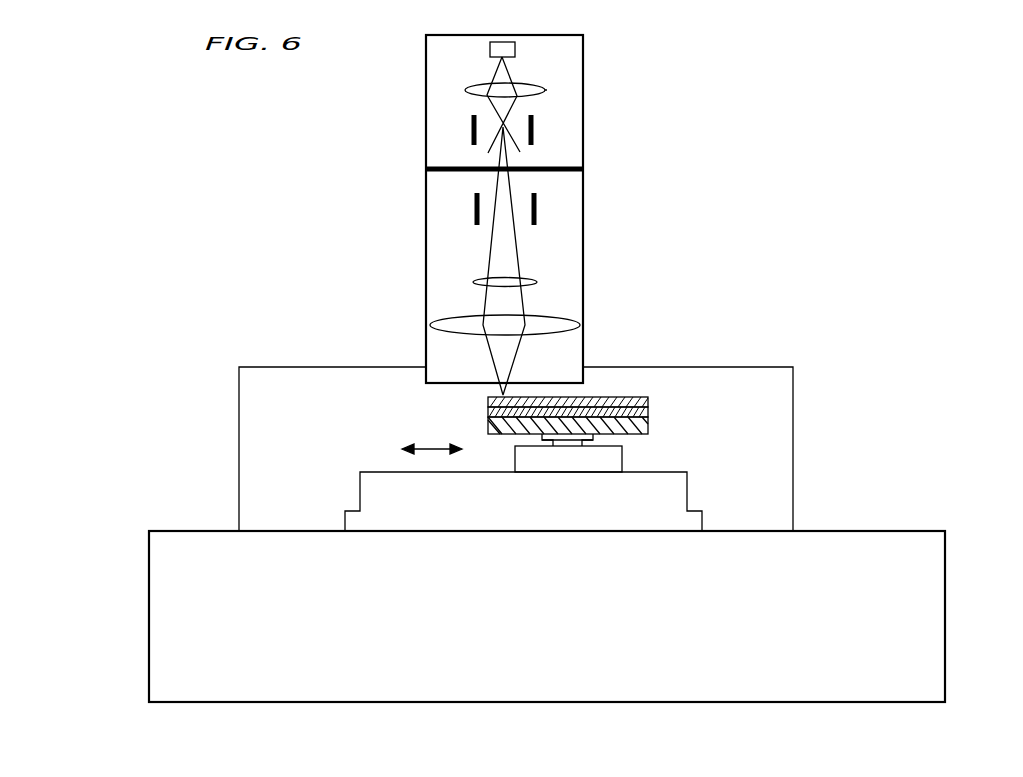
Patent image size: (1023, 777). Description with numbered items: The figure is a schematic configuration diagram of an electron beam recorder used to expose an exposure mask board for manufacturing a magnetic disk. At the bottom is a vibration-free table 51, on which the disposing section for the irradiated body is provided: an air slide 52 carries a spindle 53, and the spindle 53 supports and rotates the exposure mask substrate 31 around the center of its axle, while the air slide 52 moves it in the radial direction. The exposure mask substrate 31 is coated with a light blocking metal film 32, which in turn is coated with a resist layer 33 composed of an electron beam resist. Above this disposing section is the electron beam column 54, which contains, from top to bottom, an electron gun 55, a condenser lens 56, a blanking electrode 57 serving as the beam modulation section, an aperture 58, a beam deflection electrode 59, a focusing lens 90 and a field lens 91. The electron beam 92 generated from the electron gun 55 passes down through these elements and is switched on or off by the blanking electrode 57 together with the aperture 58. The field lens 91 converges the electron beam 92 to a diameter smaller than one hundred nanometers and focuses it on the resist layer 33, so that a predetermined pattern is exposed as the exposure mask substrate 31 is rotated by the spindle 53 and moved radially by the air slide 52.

The electron beam column 54 is at (410, 35).
The electron gun 55 is at (515, 50).
The electron beam 92 is at (512, 68).
The condenser lens 56 is at (586, 103).
The blanking electrode 57 is at (535, 128).
The aperture 58 is at (505, 176).
The beam deflection electrode 59 is at (537, 205).
The focusing lens 90 is at (537, 282).
The field lens 91 is at (578, 320).
The resist layer 33 is at (648, 398).
The light blocking metal film 32 is at (648, 409).
The exposure mask substrate 31 is at (640, 426).
The spindle 53 is at (622, 462).
The air slide 52 is at (687, 492).
The vibration-free table 51 is at (945, 604).